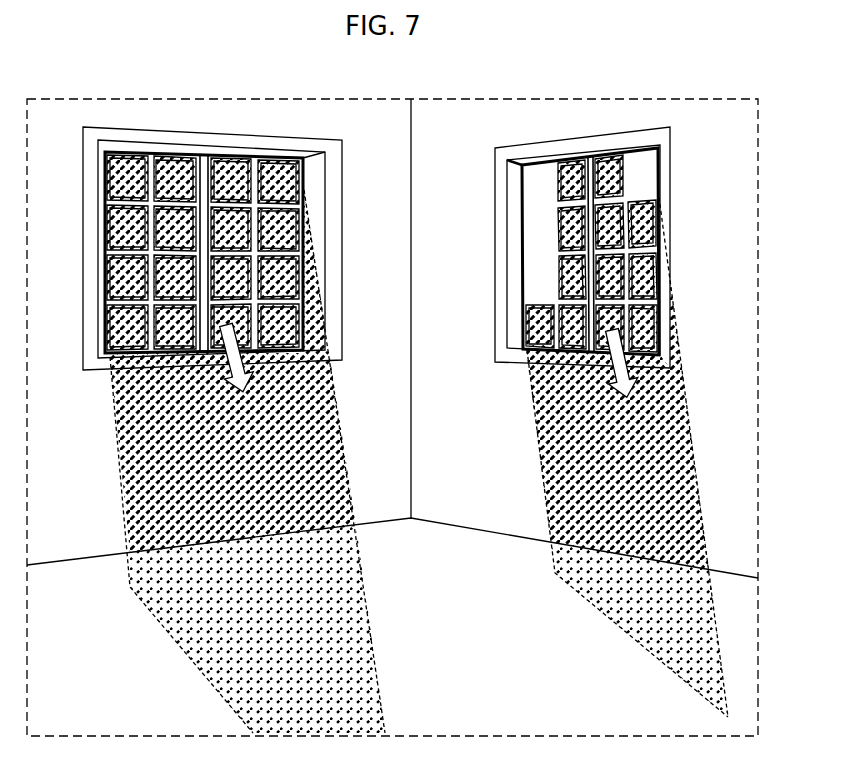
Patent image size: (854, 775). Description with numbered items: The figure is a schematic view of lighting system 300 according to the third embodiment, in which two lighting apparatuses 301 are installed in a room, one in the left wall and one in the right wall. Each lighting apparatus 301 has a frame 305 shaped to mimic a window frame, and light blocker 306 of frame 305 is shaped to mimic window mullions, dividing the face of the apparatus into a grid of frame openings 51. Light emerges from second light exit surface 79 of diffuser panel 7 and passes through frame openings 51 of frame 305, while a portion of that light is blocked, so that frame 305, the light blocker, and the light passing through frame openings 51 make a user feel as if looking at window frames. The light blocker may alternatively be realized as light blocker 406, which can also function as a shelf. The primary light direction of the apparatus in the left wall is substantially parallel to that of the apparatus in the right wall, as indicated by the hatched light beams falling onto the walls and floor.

The lighting system 300 is at (696, 68).
The lighting apparatus 301 is at (374, 220).
The frame 305 is at (173, 154).
The light blocker 406 is at (252, 160).
The frame opening 51 is at (125, 163).
The light blocker 306 is at (148, 182).
The diffuser panel 7 is at (122, 220).
The second light exit surface 79 is at (115, 275).